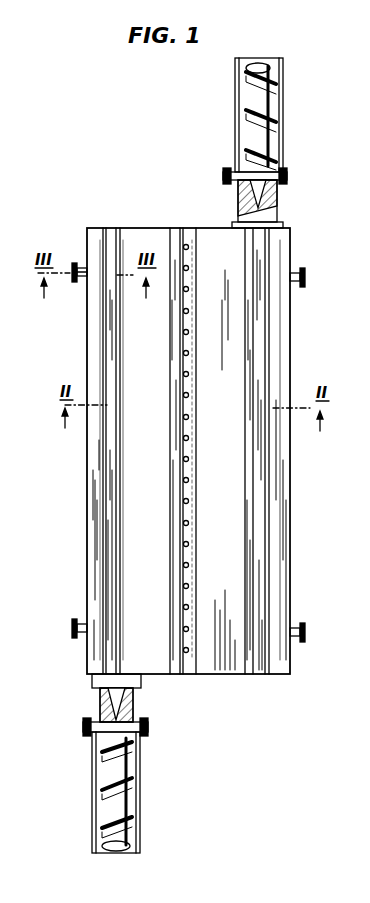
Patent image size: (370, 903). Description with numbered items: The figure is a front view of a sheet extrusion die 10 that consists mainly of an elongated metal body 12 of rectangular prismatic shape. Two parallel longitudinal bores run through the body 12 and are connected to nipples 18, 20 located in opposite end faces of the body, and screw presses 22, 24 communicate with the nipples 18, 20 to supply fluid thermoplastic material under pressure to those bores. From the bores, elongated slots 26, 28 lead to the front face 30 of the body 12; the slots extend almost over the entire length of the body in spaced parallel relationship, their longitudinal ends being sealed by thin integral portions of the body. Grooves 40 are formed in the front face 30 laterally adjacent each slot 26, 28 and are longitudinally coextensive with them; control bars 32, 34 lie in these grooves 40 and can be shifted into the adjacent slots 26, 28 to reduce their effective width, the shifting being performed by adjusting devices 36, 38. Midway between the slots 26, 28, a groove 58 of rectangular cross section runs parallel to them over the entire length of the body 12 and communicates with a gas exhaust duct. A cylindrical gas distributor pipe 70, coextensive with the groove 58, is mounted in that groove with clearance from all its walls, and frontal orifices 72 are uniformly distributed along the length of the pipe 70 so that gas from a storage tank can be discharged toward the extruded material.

The extrusion die 10 is at (72, 565).
The elongated metal body 12 is at (93, 502).
The nipple 18 is at (128, 694).
The nipple 20 is at (242, 222).
The screw press 22 is at (112, 768).
The screw press 24 is at (250, 96).
The elongated slot 26 is at (118, 470).
The elongated slot 28 is at (252, 597).
The front face 30 is at (130, 336).
The control bar 32 is at (112, 357).
The control bar 34 is at (262, 353).
The adjusting device 36 is at (79, 286).
The adjusting device 38 is at (310, 295).
The groove 40 is at (105, 535).
The groove 58 is at (190, 393).
The gas distributor pipe 70 is at (190, 433).
The frontal orifices 72 is at (189, 522).